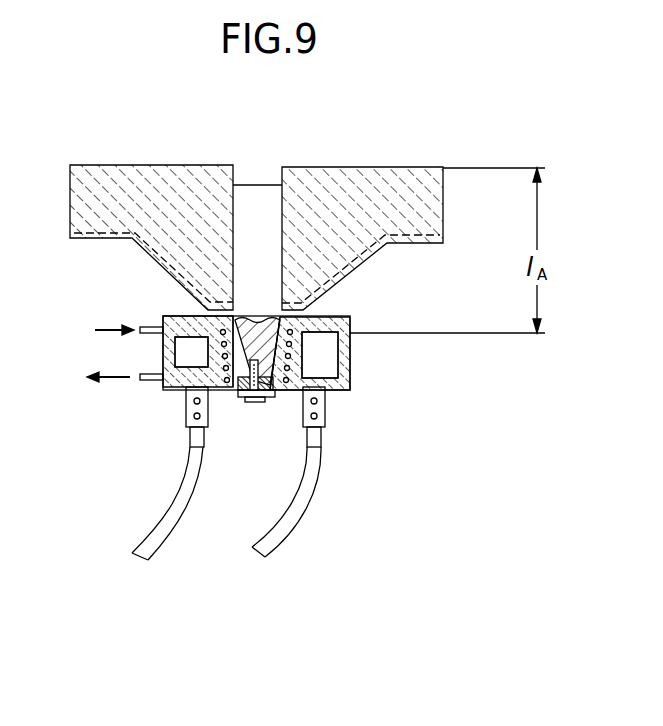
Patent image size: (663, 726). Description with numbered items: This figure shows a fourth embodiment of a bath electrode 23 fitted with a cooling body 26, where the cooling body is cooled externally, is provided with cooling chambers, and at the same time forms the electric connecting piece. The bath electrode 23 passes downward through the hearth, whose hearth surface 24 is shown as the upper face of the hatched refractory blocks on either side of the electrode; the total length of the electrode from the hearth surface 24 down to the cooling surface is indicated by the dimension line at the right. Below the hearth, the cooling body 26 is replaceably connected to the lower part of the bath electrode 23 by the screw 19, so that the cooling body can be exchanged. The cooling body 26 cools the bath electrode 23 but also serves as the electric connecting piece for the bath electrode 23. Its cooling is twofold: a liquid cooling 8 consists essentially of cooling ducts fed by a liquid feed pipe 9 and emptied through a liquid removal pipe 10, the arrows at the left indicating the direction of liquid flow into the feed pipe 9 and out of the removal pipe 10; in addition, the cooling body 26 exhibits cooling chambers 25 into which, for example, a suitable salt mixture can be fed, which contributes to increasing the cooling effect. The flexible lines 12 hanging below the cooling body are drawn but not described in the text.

The hearth surface 24 is at (133, 166).
The bath electrode 23 is at (255, 227).
The liquid cooling 8 is at (225, 392).
The cooling body 26 is at (163, 349).
The cooling chambers 25 is at (320, 352).
The liquid feed pipe 9 is at (160, 325).
The liquid removal pipe 10 is at (150, 381).
The screw 19 is at (257, 403).
The hoses 12 is at (265, 548).